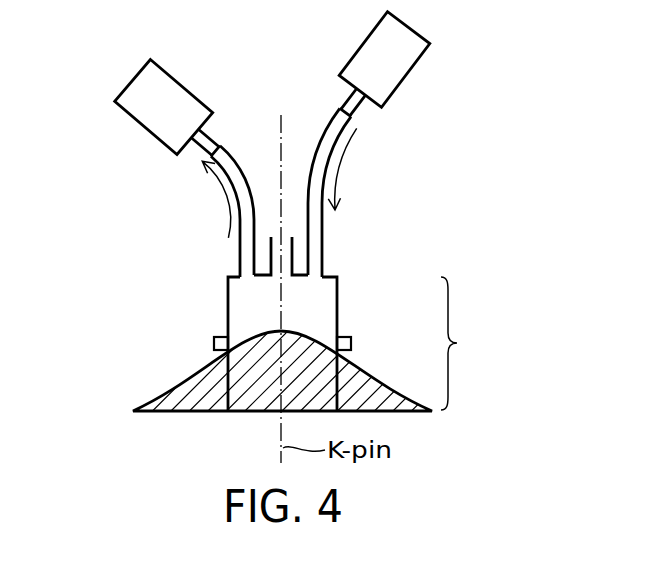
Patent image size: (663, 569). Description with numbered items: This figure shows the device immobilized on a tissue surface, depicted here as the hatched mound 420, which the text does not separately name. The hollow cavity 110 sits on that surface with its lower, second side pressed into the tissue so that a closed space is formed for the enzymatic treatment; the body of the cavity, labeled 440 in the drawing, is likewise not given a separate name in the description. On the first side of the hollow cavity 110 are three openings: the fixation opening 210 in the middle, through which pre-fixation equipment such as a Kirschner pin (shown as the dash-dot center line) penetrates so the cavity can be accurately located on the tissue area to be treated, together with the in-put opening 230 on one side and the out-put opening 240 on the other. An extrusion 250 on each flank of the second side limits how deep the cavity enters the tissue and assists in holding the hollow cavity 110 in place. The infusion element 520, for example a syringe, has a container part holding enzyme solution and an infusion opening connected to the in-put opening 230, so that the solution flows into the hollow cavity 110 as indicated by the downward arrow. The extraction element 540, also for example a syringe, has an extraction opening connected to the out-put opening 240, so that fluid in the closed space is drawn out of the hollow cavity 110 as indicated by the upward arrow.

The hollow cavity 110 is at (476, 343).
The fixation opening 210 is at (288, 256).
The in-put opening 230 is at (310, 229).
The out-put opening 240 is at (241, 254).
The extrusion 250 is at (351, 342).
The mound / base material 420 is at (166, 392).
The body 440 is at (241, 302).
The infusion element 520 is at (412, 77).
The extraction element 540 is at (142, 131).